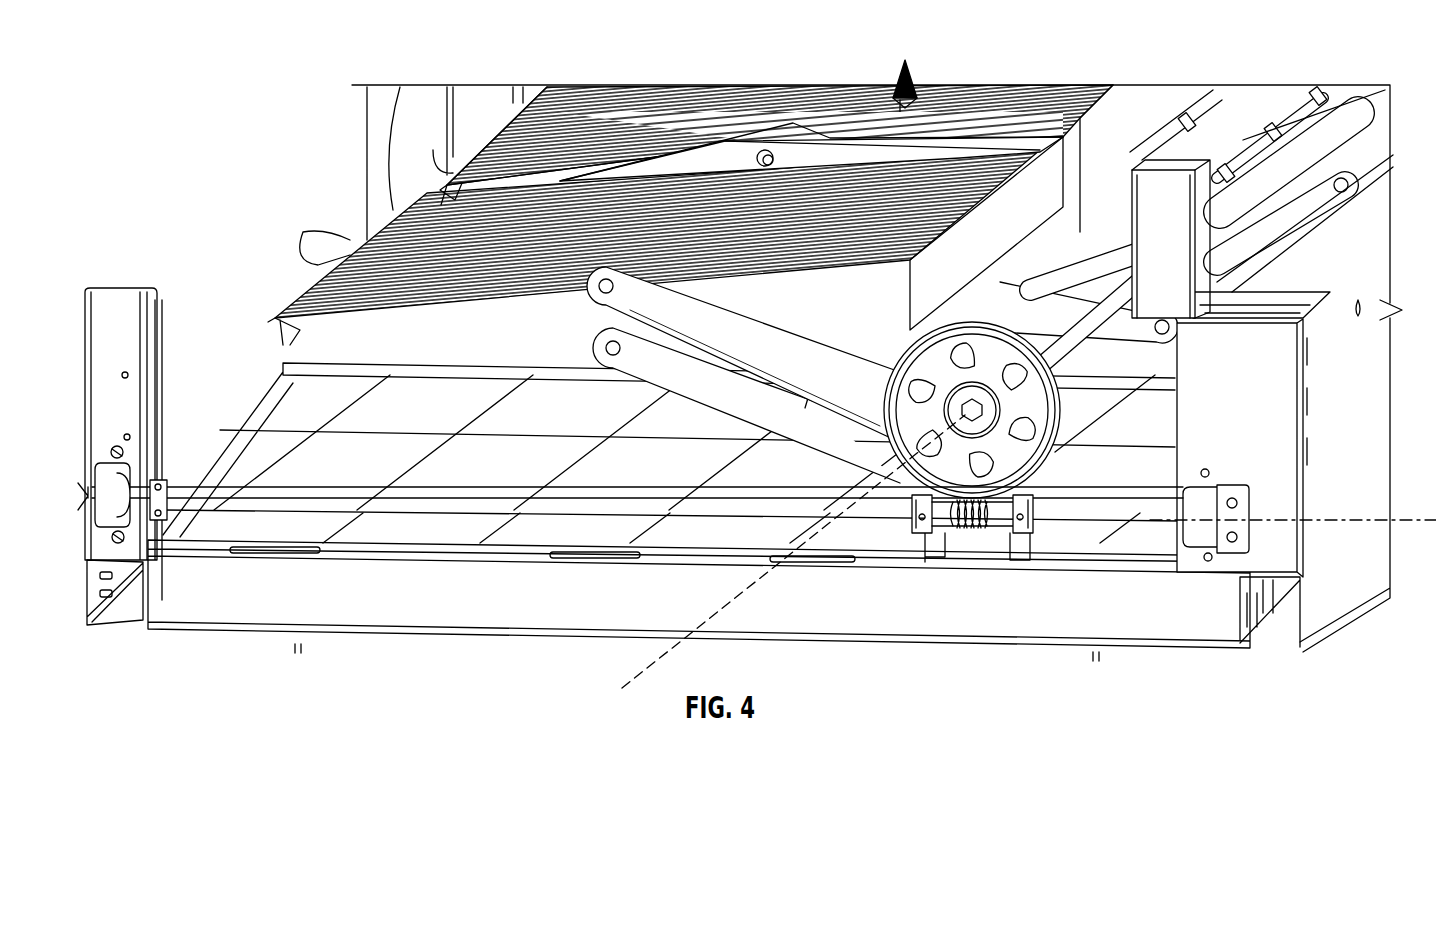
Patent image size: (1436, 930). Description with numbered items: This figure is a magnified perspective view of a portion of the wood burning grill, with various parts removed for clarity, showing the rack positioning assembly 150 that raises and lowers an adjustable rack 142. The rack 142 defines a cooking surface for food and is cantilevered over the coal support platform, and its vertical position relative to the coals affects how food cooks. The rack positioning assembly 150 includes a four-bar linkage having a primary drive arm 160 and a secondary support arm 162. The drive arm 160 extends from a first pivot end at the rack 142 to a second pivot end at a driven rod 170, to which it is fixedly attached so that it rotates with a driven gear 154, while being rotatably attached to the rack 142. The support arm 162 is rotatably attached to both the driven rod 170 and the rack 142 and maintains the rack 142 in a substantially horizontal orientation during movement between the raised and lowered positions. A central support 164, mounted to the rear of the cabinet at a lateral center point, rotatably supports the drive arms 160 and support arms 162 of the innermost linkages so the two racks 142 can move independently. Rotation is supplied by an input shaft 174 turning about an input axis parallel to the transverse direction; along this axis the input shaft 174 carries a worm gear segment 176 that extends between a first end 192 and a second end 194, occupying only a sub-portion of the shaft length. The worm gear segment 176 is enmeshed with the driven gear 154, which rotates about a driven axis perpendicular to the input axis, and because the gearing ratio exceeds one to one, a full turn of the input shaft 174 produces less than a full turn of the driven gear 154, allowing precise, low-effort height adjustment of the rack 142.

The adjustable rack 142 is at (540, 125).
The rack positioning assembly 150 is at (288, 566).
The driven gear 154 is at (897, 355).
The primary drive arm 160 is at (715, 327).
The secondary support arm 162 is at (700, 402).
The central support 164 is at (1170, 168).
The driven rod 170 is at (1103, 312).
The input shaft 174 is at (386, 500).
The worm gear segment 176 is at (980, 533).
The first end 192 is at (1003, 520).
The second end 194 is at (940, 535).